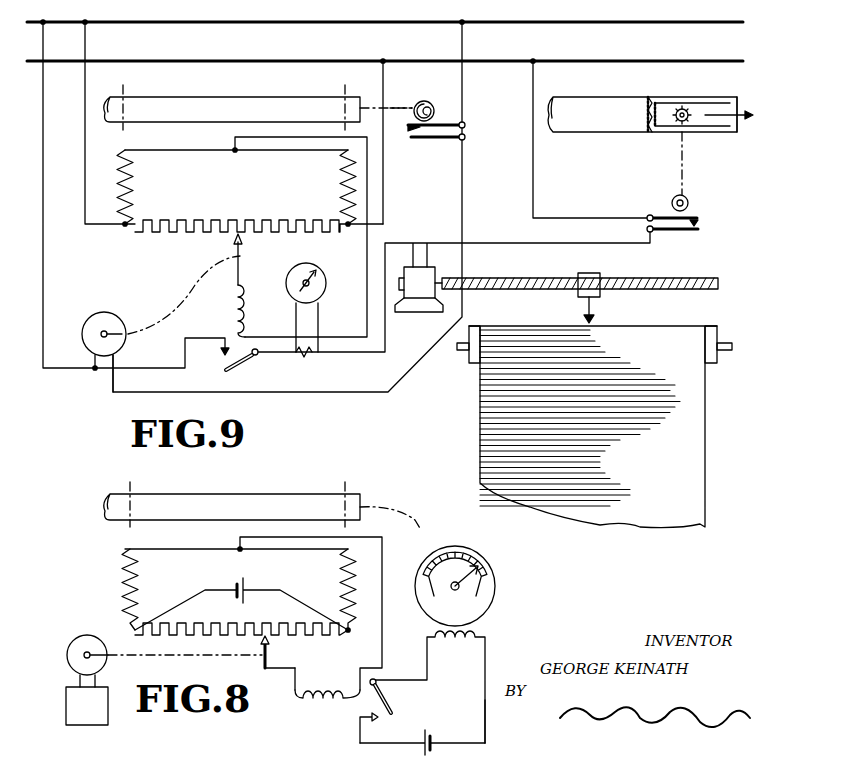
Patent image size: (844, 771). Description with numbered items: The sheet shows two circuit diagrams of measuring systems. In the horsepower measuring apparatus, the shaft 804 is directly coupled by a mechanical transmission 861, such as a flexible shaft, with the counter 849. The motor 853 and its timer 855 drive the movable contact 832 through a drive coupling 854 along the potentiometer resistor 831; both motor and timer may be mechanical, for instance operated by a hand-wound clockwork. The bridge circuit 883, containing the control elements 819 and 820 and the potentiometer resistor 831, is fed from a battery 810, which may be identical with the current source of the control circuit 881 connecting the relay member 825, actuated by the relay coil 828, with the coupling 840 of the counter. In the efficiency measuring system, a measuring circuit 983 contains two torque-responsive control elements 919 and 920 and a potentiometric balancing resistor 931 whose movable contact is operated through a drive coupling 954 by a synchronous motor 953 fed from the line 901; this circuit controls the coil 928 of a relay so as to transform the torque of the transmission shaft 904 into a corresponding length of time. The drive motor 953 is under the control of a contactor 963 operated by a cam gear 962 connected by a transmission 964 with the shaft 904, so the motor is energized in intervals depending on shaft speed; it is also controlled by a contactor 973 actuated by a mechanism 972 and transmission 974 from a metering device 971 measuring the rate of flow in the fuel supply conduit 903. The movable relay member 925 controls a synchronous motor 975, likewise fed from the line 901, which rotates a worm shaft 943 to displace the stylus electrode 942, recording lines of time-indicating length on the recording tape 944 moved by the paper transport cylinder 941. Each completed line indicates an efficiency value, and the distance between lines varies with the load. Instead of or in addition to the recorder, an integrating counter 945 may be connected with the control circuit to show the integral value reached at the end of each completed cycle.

In FIG. 9, the line 901 is at (642, 60).
In FIG. 9, the transmission shaft 904 is at (217, 106).
In FIG. 9, the transmission 964 is at (397, 107).
In FIG. 9, the cam gear 962 is at (437, 112).
In FIG. 9, the contactor 963 is at (466, 136).
In FIG. 9, the fuel supply conduit 903 is at (605, 122).
In FIG. 9, the metering device 971 is at (684, 106).
In FIG. 9, the transmission 974 is at (690, 167).
In FIG. 9, the mechanism 972 is at (688, 201).
In FIG. 9, the contactor 973 is at (697, 230).
In FIG. 9, the measuring circuit 983 is at (178, 151).
In FIG. 9, the torque-responsive control element 919 is at (133, 186).
In FIG. 9, the torque-responsive control element 920 is at (340, 185).
In FIG. 9, the potentiometric balancing resistor 931 is at (240, 220).
In FIG. 9, the drive coupling 954 is at (180, 275).
In FIG. 9, the synchronous motor 953 is at (104, 312).
In FIG. 9, the relay coil 928 is at (231, 308).
In FIG. 9, the integrating counter 945 is at (311, 273).
In FIG. 9, the movable relay member 925 is at (241, 363).
In FIG. 9, the synchronous motor 975 is at (423, 300).
In FIG. 9, the worm shaft 943 is at (531, 278).
In FIG. 9, the stylus electrode 942 is at (603, 300).
In FIG. 9, the paper transport cylinder 941 is at (713, 352).
In FIG. 9, the recording tape 944 is at (697, 447).
In FIG. 8, the shaft 804 is at (217, 504).
In FIG. 8, the mechanical transmission 861 is at (445, 552).
In FIG. 8, the bridge circuit 883 is at (125, 549).
In FIG. 8, the control element 819 is at (140, 580).
In FIG. 8, the control element 820 is at (340, 571).
In FIG. 8, the potentiometer resistor 831 is at (240, 614).
In FIG. 8, the movable contact 832 is at (272, 650).
In FIG. 8, the drive coupling 854 is at (124, 650).
In FIG. 8, the motor 853 is at (70, 645).
In FIG. 8, the timer 855 is at (68, 702).
In FIG. 8, the relay coil 828 is at (320, 702).
In FIG. 8, the counter 849 is at (497, 573).
In FIG. 8, the coupling 840 is at (429, 687).
In FIG. 8, the relay member 825 is at (386, 698).
In FIG. 8, the battery 810 is at (423, 741).
In FIG. 8, the control circuit 881 is at (485, 727).